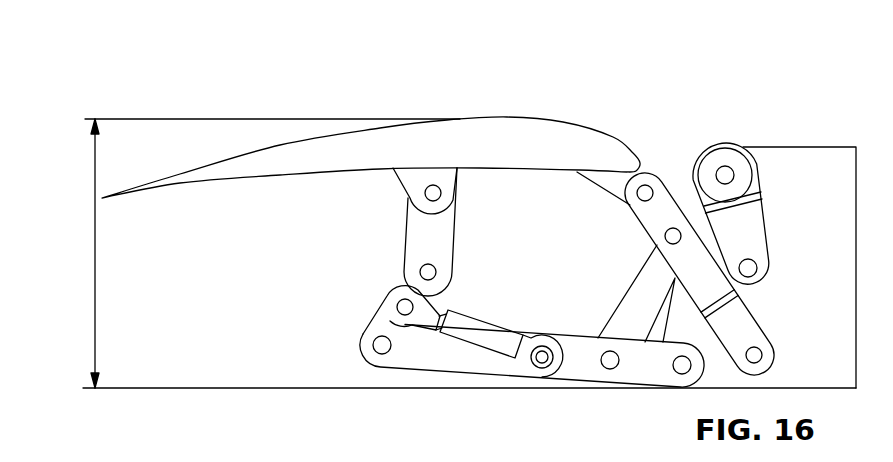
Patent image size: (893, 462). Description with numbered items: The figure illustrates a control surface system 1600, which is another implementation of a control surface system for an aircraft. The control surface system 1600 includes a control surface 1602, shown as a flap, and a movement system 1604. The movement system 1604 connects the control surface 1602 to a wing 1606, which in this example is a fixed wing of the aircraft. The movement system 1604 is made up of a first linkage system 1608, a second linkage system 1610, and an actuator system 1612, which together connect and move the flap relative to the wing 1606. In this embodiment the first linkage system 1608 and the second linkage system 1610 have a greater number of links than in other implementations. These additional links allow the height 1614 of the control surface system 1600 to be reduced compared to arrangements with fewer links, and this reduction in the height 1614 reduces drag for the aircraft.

The control surface system 1600 is at (737, 47).
The control surface 1602 is at (523, 128).
The movement system 1604 is at (350, 348).
The wing 1606 is at (800, 156).
The first linkage system 1608 is at (775, 323).
The second linkage system 1610 is at (366, 291).
The actuator system 1612 is at (434, 380).
The height 1614 is at (95, 254).